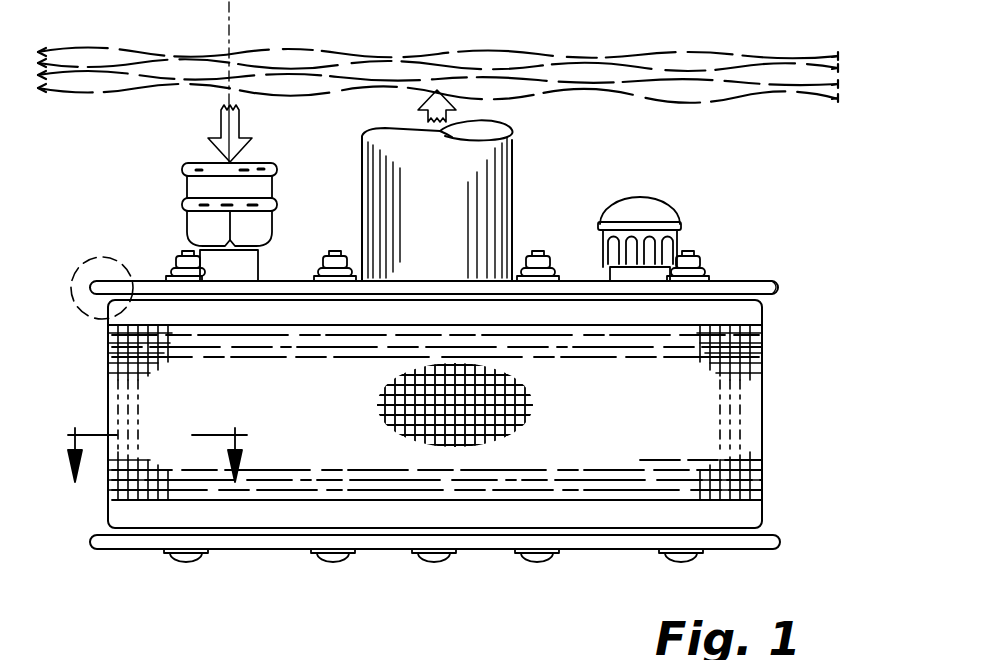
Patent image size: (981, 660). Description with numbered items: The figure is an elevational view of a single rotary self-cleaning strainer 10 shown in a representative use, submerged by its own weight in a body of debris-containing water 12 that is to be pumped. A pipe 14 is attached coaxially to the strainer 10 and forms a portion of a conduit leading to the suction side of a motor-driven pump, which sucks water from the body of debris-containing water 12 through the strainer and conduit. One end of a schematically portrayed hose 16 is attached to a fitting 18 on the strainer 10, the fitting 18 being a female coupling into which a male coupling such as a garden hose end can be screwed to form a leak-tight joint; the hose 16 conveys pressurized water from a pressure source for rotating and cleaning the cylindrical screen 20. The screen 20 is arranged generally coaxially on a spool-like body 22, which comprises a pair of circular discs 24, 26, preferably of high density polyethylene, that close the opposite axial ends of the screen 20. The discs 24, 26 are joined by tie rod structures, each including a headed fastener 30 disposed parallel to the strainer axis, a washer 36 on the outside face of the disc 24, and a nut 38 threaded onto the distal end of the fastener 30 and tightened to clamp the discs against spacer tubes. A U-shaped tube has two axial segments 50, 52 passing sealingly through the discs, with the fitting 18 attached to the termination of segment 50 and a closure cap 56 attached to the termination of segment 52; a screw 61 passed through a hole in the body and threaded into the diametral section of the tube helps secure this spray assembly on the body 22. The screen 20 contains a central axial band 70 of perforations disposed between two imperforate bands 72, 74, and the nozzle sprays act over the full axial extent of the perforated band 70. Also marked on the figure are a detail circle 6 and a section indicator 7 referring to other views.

The rotary self-cleaning strainer 10 is at (774, 271).
The body of debris-containing water 12 is at (622, 46).
The pipe 14 is at (513, 141).
The hose 16 is at (236, 21).
The fitting 18 is at (183, 247).
The cylindrical screen 20 is at (761, 372).
The spool-like body 22 is at (728, 281).
The circular disc 24 is at (774, 286).
The circular disc 26 is at (97, 545).
The headed fastener 30 is at (180, 252).
The washer 36 is at (167, 278).
The nut 38 is at (175, 266).
The axial segment 50 is at (259, 257).
The axial segment 52 is at (611, 273).
The closure cap 56 is at (622, 202).
The screw 61 is at (433, 562).
The axial band of perforations 70 is at (762, 413).
The imperforate band 72 is at (757, 315).
The imperforate band 74 is at (750, 517).
The detail view circle 6 is at (78, 312).
The section line 7 is at (159, 441).